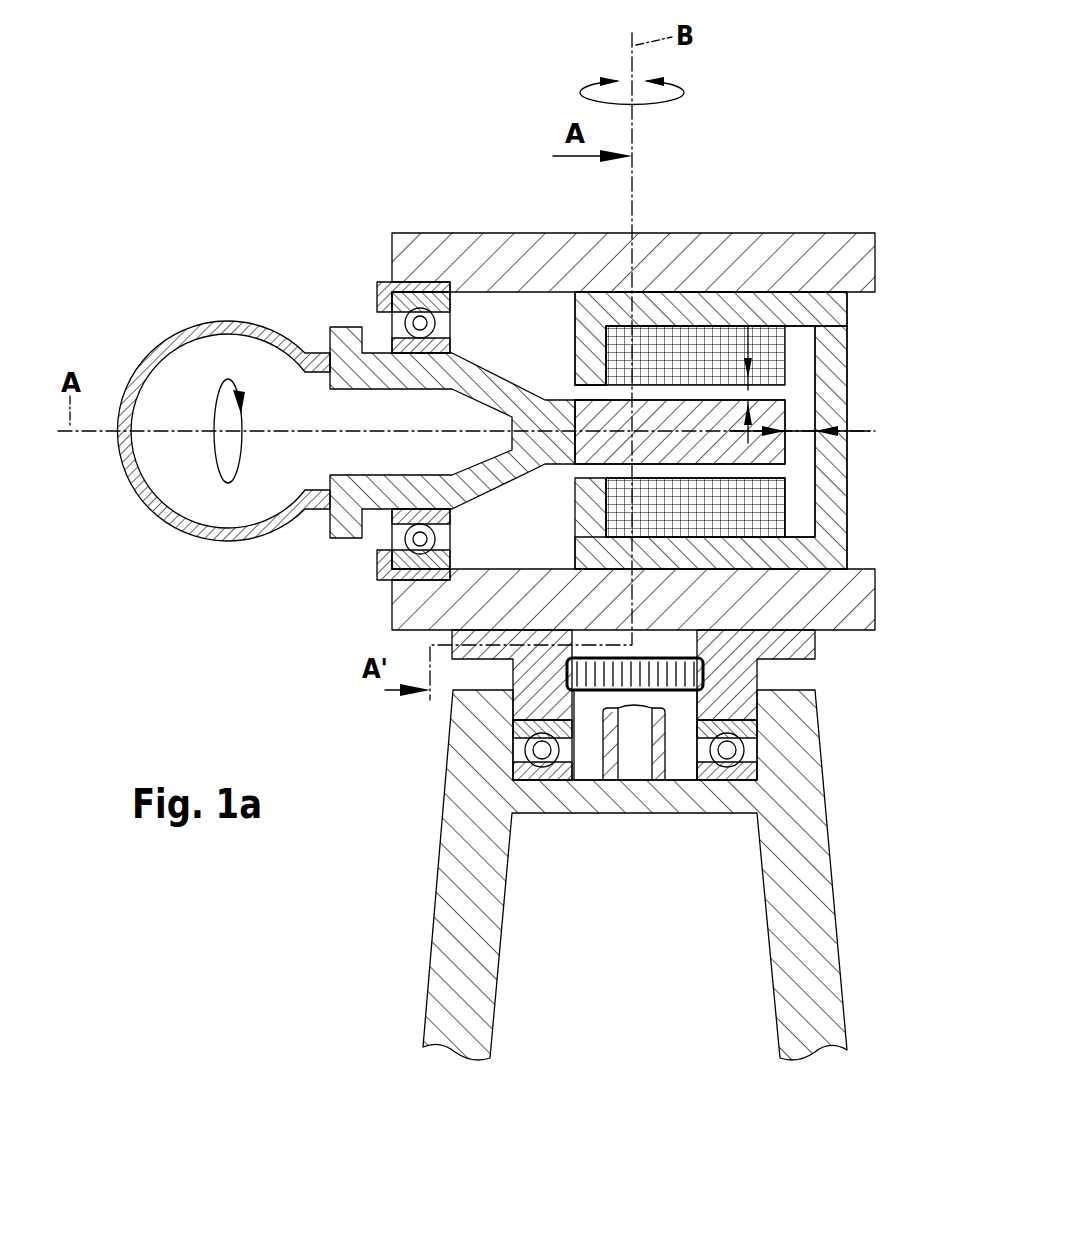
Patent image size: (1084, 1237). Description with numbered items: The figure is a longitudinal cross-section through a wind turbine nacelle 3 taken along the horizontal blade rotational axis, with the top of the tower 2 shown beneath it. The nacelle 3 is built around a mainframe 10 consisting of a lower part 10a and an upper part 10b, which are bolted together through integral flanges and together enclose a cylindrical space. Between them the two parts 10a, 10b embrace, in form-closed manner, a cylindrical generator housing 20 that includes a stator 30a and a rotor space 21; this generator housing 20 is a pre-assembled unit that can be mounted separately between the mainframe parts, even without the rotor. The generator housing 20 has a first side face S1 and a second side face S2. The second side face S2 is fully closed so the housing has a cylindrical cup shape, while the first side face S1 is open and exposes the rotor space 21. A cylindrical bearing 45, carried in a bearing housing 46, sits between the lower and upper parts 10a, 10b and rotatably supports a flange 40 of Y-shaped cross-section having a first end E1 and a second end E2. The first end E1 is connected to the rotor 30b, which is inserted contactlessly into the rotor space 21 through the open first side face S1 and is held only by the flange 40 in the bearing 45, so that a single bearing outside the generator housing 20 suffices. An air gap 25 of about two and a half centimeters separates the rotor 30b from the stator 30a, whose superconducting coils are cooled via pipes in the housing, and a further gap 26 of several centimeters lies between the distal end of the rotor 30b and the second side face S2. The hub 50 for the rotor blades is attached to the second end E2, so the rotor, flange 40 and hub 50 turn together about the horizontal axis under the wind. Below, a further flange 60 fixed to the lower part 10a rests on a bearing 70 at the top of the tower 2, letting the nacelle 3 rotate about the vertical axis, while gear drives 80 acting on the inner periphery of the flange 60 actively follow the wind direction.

The tower 2 is at (807, 905).
The nacelle 3 is at (826, 182).
The mainframe 10 is at (877, 255).
The lower part 10a is at (840, 600).
The upper part 10b is at (706, 262).
The generator housing 20 is at (832, 413).
The rotor space 21 is at (585, 469).
The air gap 25 is at (748, 390).
The gap 26 is at (798, 432).
The stator 30a is at (773, 345).
The rotor 30b is at (765, 450).
The flange 40 is at (483, 477).
The bearing 45 is at (432, 320).
The bearing housing 46 is at (378, 283).
The hub 50 is at (230, 322).
The further flange 60 is at (797, 645).
The bearing 70 is at (542, 768).
The gear drive 80 is at (620, 747).
The first side face S1 is at (568, 306).
The second side face S2 is at (848, 318).
The first end E1 is at (596, 398).
The second end E2 is at (330, 348).